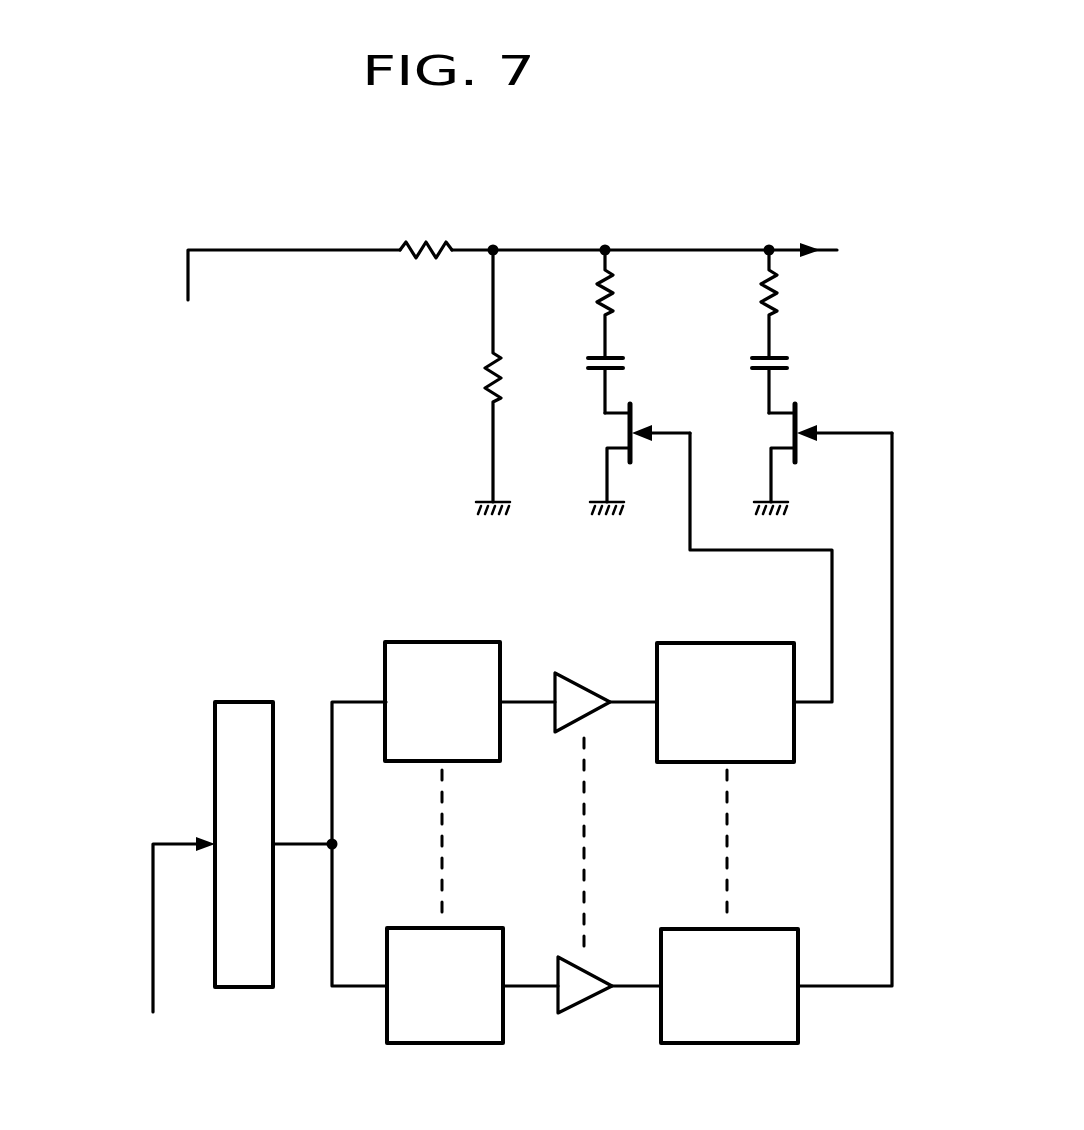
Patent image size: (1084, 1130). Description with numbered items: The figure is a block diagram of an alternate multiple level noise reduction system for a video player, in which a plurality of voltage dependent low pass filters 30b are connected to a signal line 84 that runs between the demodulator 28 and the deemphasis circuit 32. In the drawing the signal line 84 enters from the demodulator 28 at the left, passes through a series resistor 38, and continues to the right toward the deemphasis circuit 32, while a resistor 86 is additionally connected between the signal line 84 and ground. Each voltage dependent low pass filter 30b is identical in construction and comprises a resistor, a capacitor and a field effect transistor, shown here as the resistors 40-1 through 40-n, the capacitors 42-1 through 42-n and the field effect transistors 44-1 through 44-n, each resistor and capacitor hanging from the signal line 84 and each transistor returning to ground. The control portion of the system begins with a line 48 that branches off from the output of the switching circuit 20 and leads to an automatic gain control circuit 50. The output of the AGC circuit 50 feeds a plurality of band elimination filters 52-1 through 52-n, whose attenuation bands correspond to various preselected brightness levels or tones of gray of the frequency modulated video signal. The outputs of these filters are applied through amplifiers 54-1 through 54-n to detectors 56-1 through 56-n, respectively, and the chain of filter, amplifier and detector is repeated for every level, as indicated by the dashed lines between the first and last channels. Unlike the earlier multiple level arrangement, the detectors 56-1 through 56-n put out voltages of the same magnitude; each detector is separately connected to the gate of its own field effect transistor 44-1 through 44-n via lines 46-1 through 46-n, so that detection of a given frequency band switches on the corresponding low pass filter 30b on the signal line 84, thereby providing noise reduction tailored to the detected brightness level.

The voltage dependent low pass filter 30b is at (736, 186).
The signal line 84 is at (336, 247).
The resistor 38 is at (418, 247).
The resistor 86 is at (490, 379).
The resistor 40-1 is at (611, 292).
The capacitor 42-1 is at (610, 355).
The field effect transistor 44-1 is at (633, 415).
The resistor 40-n is at (776, 294).
The capacitor 42-n is at (778, 356).
The field effect transistor 44-n is at (798, 415).
The line 46-1 is at (820, 708).
The line 46-n is at (841, 984).
The line 48 is at (175, 849).
The automatic gain control circuit 50 is at (237, 700).
The band elimination filter 52-1 is at (431, 641).
The band elimination filter 52-n is at (450, 1045).
The amplifier 54-1 is at (582, 670).
The amplifier 54-n is at (590, 1012).
The detector 56-1 is at (720, 642).
The detector 56-n is at (740, 1045).
The demodulator 28 is at (187, 329).
The deemphasis circuit 32 is at (885, 241).
The switching circuit 20 is at (152, 1055).